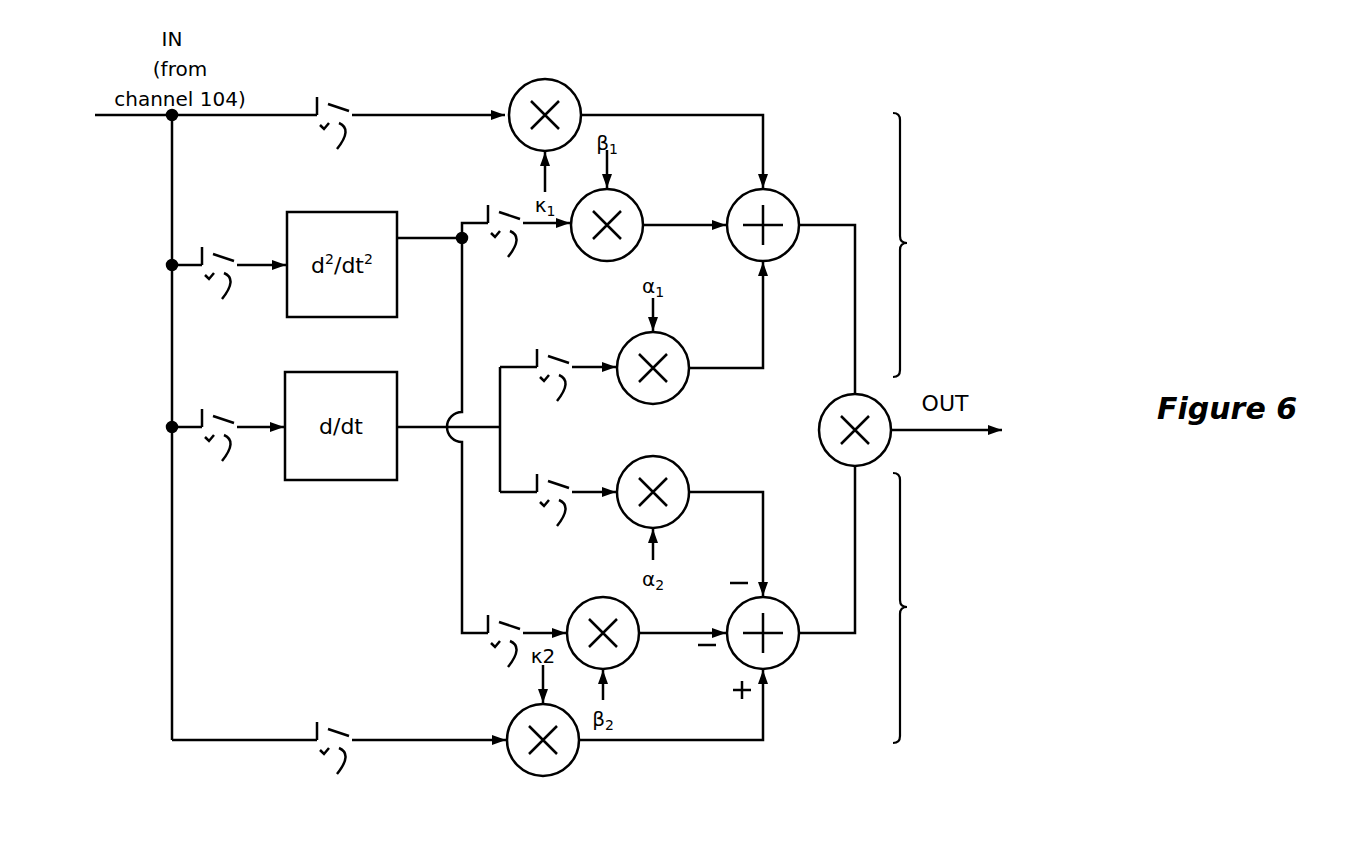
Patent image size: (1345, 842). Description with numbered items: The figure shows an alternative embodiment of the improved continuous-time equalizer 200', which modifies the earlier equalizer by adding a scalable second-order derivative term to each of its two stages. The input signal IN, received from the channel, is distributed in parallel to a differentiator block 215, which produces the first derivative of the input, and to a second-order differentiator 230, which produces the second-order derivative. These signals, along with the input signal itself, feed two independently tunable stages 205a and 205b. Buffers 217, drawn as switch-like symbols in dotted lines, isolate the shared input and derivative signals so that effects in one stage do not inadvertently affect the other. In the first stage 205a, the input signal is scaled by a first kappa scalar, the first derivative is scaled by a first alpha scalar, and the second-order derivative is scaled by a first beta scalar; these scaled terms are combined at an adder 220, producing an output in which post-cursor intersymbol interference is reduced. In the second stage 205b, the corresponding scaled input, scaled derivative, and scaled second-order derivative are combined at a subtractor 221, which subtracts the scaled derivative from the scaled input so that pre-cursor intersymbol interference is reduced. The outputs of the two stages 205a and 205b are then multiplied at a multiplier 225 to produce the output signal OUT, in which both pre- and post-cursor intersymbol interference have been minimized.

The equalizer 200' is at (944, 28).
The buffer 217 is at (385, 433).
The second-order differentiator 230 is at (374, 211).
The differentiator block 215 is at (376, 371).
The adder 220 is at (788, 195).
The subtractor 221 is at (788, 660).
The multiplier 225 is at (822, 416).
The first stage 205a is at (933, 245).
The second stage 205b is at (933, 608).